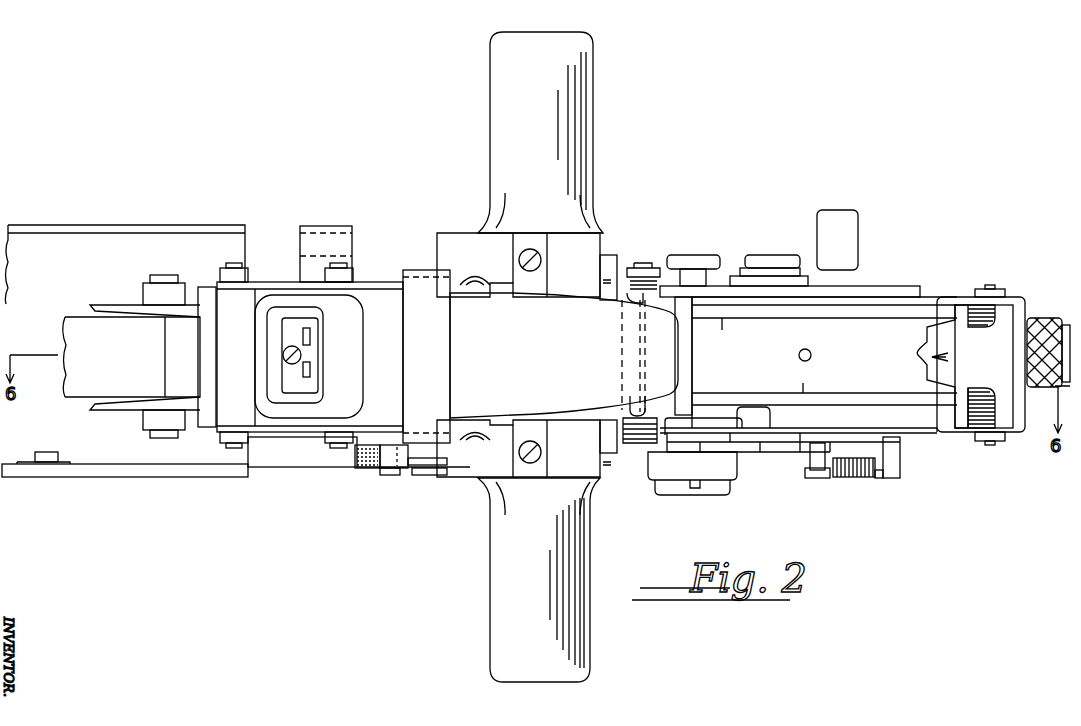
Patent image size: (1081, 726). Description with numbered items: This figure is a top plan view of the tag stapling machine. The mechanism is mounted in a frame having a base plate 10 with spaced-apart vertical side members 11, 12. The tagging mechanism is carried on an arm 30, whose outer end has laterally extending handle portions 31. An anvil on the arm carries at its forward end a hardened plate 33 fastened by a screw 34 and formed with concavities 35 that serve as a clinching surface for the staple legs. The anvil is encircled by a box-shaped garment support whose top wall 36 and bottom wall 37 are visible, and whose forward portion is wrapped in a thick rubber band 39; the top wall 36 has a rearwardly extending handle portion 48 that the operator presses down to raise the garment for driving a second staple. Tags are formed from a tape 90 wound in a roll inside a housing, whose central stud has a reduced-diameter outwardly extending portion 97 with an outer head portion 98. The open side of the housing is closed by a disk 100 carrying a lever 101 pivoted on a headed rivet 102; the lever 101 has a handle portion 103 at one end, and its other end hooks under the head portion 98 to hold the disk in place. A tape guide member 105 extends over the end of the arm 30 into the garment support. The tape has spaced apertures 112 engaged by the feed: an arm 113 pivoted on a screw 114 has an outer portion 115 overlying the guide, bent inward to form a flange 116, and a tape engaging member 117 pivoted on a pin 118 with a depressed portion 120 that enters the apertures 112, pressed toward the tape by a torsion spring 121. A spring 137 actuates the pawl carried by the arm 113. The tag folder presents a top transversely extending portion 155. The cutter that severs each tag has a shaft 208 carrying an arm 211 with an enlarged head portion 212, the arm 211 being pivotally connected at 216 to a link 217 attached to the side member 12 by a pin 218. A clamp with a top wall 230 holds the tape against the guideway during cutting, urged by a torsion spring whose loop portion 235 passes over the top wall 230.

The base plate 10 is at (30, 264).
The side member 11 is at (121, 235).
The side member 12 is at (90, 478).
The arm 30 is at (606, 465).
The handle portions 31 is at (540, 357).
The hardened plate 33 is at (290, 372).
The screw 34 is at (288, 355).
The concavities 35 is at (312, 336).
The top wall 36 is at (320, 385).
The bottom wall 37 is at (268, 330).
The rubber band 39 is at (277, 293).
The handle portion 48 is at (564, 355).
The tape 90 is at (808, 374).
The outwardly extending portion 97 is at (700, 281).
The head portion 98 is at (673, 255).
The disk 100 is at (905, 296).
The lever 101 is at (814, 278).
The headed rivet 102 is at (762, 257).
The handle portion 103 is at (838, 240).
The tape guide member 105 is at (722, 318).
The apertures 112 is at (811, 351).
The arm 113 is at (942, 440).
The screw 114 is at (716, 492).
The outer portion 115 is at (1016, 403).
The flange 116 is at (960, 300).
The tape engaging member 117 is at (993, 366).
The pin 118 is at (988, 447).
The depressed portion 120 is at (925, 357).
The torsion spring 121 is at (966, 410).
The spring 137 is at (858, 480).
The top transversely extending portion 155 is at (426, 356).
The shaft 208 is at (398, 476).
The arm 211 is at (440, 451).
The enlarged head portion 212 is at (371, 471).
The pivotal connection 216 is at (430, 480).
The link 217 is at (295, 470).
The pin 218 is at (48, 452).
The top wall 230 is at (691, 350).
The loop portion 235 is at (655, 419).